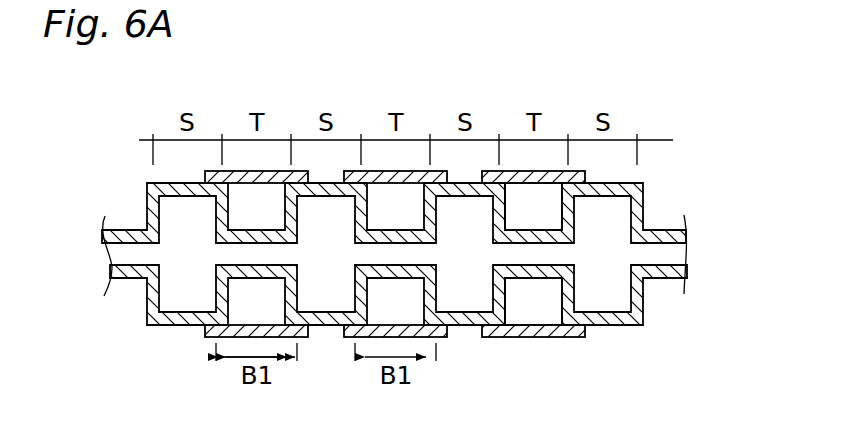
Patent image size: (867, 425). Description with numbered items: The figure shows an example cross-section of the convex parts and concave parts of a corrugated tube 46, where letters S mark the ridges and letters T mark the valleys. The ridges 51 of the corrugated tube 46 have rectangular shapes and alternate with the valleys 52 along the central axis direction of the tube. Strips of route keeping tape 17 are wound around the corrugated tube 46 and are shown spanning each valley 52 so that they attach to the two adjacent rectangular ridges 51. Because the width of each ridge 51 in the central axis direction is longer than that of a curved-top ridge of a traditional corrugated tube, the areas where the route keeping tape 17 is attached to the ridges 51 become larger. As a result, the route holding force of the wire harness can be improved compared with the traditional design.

The route keeping tape 17 is at (278, 171).
The corrugated tube 46 is at (669, 261).
The ridge 51 is at (642, 183).
The valley 52 is at (536, 226).